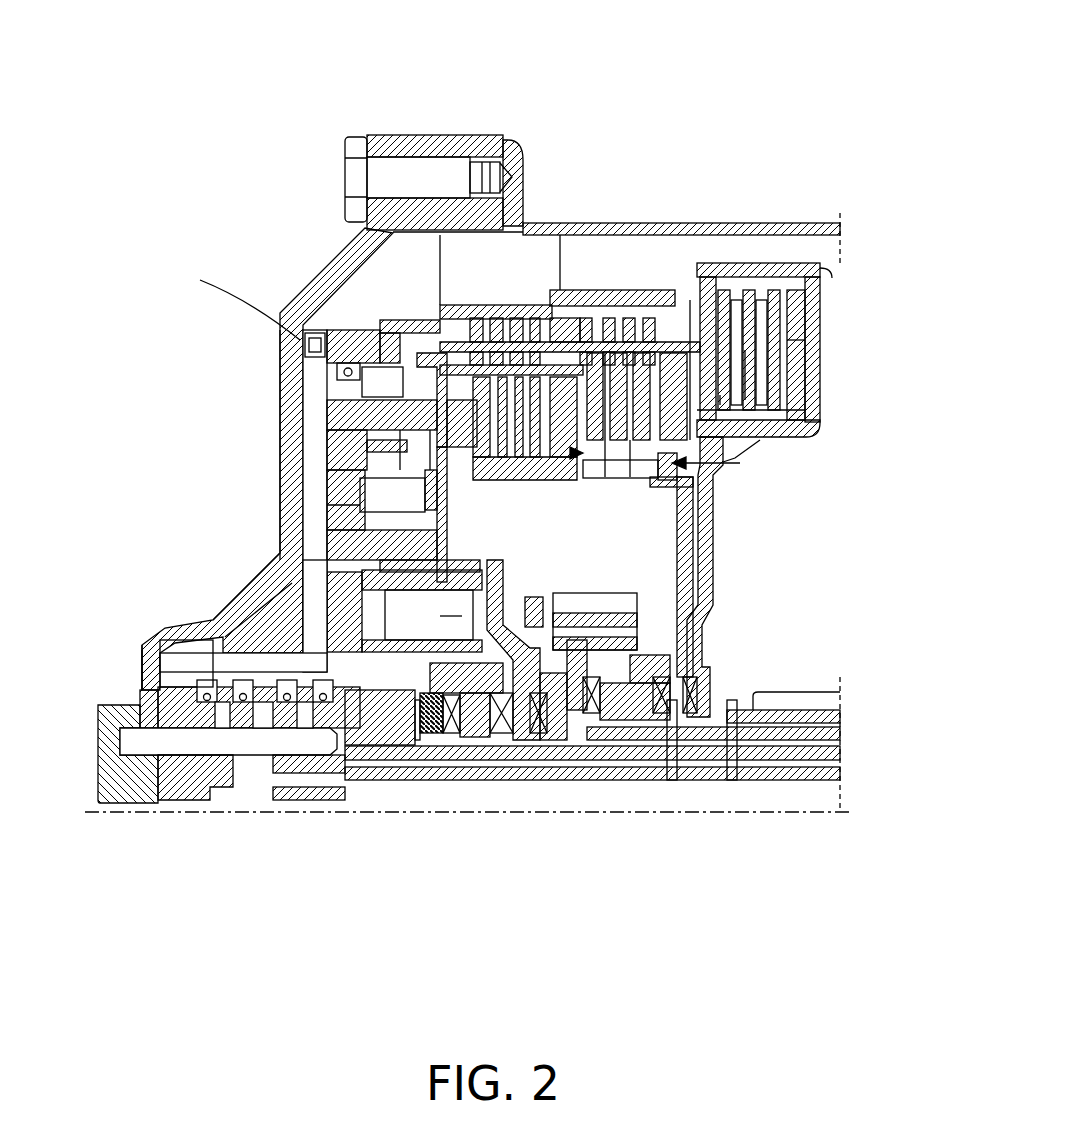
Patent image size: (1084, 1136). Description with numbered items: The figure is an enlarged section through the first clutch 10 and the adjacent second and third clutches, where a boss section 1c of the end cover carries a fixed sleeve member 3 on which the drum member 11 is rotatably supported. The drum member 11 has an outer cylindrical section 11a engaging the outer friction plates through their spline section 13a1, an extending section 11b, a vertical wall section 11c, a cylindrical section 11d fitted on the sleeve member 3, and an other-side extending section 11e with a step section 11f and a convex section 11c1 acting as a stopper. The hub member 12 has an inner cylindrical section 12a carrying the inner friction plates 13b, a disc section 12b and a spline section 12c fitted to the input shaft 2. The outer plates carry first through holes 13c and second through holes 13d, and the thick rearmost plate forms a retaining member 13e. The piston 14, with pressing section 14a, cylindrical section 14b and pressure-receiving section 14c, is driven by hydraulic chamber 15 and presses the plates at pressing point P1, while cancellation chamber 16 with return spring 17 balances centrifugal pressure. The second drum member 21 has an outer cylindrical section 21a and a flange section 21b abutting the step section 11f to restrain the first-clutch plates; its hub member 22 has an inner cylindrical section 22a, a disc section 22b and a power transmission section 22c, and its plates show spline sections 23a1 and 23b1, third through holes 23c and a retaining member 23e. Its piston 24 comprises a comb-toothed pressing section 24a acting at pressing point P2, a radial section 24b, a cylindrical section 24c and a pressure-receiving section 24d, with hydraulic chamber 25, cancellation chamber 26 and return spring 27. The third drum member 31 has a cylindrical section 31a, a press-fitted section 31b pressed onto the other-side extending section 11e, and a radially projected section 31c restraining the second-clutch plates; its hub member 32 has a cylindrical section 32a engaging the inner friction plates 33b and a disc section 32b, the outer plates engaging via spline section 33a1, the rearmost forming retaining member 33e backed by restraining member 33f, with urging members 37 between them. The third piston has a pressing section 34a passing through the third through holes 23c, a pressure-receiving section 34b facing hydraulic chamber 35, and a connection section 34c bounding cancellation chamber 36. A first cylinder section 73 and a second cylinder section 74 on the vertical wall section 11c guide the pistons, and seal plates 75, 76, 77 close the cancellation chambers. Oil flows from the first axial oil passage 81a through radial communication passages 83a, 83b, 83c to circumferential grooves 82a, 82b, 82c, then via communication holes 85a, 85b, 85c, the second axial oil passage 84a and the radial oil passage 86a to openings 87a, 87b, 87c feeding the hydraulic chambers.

The boss section 1c is at (150, 800).
The input shaft 2 is at (820, 775).
The sleeve member 3 is at (495, 700).
The first clutch 10 is at (438, 280).
The drum member 11 is at (300, 296).
The outer cylindrical section 11a is at (455, 300).
The extending section 11b is at (345, 222).
The vertical wall section 11c is at (285, 440).
The convex section 11c1 is at (560, 235).
The cylindrical section 11d is at (145, 650).
The other-side extending section 11e is at (640, 292).
The step section 11f is at (445, 300).
The hub member 12 is at (722, 459).
The inner cylindrical section 12a is at (520, 735).
The disc section 12b is at (590, 613).
The spline section 12c is at (540, 790).
The spline section 13a1 is at (530, 310).
The inner friction plate 13b is at (560, 465).
The first through hole 13c is at (433, 177).
The second through hole 13d is at (480, 160).
The retaining member 13e is at (530, 238).
The piston 14 is at (312, 640).
The pressing section 14a is at (430, 440).
The cylindrical section 14b is at (429, 615).
The pressure-receiving section 14c is at (380, 760).
The hydraulic chamber 15 is at (250, 596).
The cancellation chamber 16 is at (455, 613).
The return spring 17 is at (435, 735).
The drum member 21 is at (553, 40).
The outer cylindrical section 21a is at (585, 340).
The flange section 21b is at (565, 318).
The hub member 22 is at (696, 478).
The inner cylindrical section 22a is at (670, 485).
The disc section 22b is at (568, 655).
The power transmission section 22c is at (645, 760).
The clutch plates 23a1 is at (600, 320).
The clutch plates 23b1 is at (640, 440).
The third through hole 23c is at (750, 370).
The retaining member 23e is at (620, 353).
The piston 24 is at (330, 490).
The pressing section 24a is at (442, 353).
The radial section 24b is at (310, 380).
The cylindrical section 24c is at (375, 448).
The pressure-receiving section 24d is at (430, 480).
The hydraulic chamber 25 is at (320, 520).
The cancellation chamber 26 is at (380, 500).
The return spring 27 is at (390, 566).
The drum member 31 is at (820, 285).
The cylindrical section 31a is at (828, 270).
The press-fitted section 31b is at (540, 318).
The radially projected section 31c is at (690, 440).
The hub member 32 is at (770, 428).
The cylindrical section 32a is at (805, 440).
The disc section 32b is at (706, 595).
The spline section 33a1 is at (775, 290).
The inner friction plate 33b is at (740, 460).
The retaining member 33e is at (800, 340).
The restraining member 33f is at (800, 290).
The pressing section 34a is at (390, 335).
The pressure-receiving section 34b is at (340, 415).
The connection section 34c is at (400, 322).
The hydraulic chamber 35 is at (330, 360).
The cancellation chamber 36 is at (392, 392).
The urging member 37 is at (770, 290).
The first cylinder section 73 is at (370, 585).
The second cylinder section 74 is at (340, 450).
The seal plate 75 is at (478, 760).
The seal plate 76 is at (340, 590).
The seal plate 77 is at (316, 337).
The first axial oil passage 81a is at (290, 720).
The circumferential groove 82a is at (320, 740).
The circumferential groove 82b is at (270, 760).
The circumferential groove 82c is at (190, 795).
The radial communication passage 83a is at (300, 790).
The radial communication passage 83b is at (260, 790).
The radial communication passage 83c is at (210, 790).
The second axial oil passage 84a is at (145, 660).
The communication hole 85a is at (270, 790).
The communication hole 85b is at (225, 790).
The communication hole 85c is at (170, 665).
The radial oil passage 86a is at (330, 350).
The opening 87a is at (328, 735).
The opening 87b is at (345, 540).
The opening 87c is at (340, 372).
The pressing point P1 is at (760, 405).
The pressing point P2 is at (640, 440).